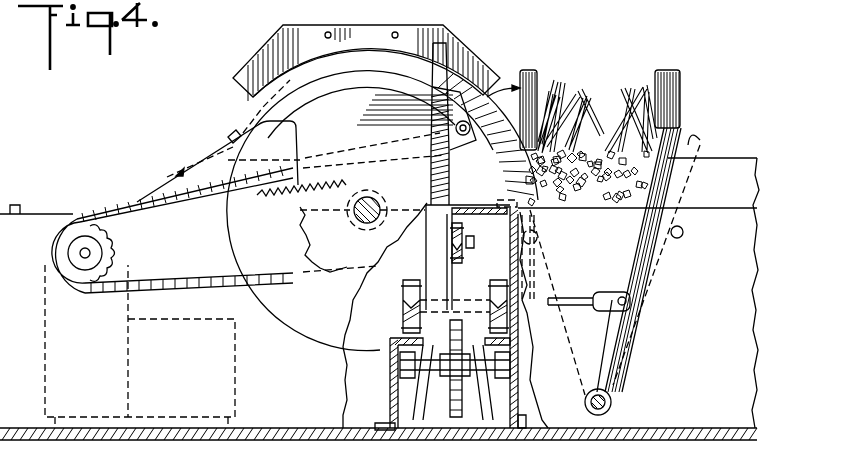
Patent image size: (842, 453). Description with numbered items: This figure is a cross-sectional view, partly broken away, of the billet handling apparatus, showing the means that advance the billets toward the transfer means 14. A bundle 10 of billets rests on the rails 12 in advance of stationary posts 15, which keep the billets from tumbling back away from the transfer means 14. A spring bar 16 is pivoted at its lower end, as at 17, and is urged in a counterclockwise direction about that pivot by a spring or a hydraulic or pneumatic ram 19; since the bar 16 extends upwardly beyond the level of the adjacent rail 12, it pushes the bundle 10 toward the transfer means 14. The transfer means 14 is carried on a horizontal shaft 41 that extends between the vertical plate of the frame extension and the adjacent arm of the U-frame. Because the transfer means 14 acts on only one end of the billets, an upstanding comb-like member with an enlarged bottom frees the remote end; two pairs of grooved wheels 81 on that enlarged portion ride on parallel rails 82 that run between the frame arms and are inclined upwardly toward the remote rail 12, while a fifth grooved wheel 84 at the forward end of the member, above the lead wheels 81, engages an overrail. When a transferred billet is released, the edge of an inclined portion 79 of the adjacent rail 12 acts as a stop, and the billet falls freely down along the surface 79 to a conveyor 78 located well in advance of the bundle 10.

The bundle 10 is at (600, 65).
The rails 12 is at (729, 162).
The transfer means 14 is at (230, 105).
The stationary posts 15 is at (670, 86).
The spring bar 16 is at (620, 338).
The pivot 17 is at (606, 398).
The hydraulic or pneumatic ram 19 is at (621, 271).
The horizontal shaft 41 is at (357, 222).
The conveyor 78 is at (44, 214).
The inclined portion 79 is at (132, 205).
The grooved wheels 81 is at (490, 290).
The parallel rails 82 is at (398, 338).
The fifth grooved wheel 84 is at (462, 229).